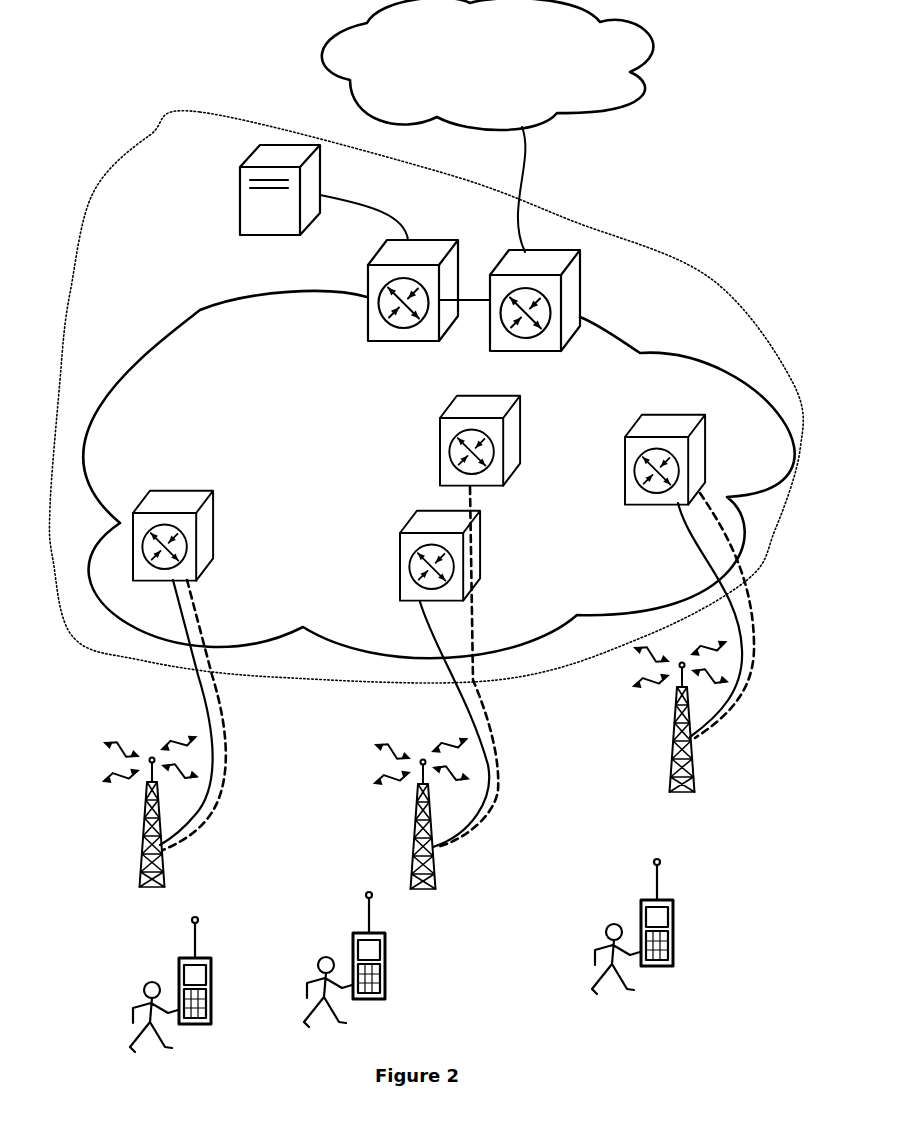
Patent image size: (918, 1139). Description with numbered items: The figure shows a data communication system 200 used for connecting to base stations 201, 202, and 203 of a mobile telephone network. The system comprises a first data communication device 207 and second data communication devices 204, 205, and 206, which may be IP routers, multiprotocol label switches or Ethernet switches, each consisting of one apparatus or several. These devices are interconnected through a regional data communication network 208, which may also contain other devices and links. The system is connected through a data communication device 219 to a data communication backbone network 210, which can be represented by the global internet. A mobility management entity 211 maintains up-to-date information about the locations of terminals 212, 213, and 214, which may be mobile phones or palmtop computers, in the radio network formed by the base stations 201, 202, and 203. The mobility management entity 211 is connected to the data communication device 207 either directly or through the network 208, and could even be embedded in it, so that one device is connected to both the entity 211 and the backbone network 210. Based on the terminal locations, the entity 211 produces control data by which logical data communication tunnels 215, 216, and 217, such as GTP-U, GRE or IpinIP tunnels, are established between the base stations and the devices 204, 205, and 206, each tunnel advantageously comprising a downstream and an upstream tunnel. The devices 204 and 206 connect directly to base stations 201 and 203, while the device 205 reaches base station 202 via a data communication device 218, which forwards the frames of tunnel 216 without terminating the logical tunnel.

The data communication system 200 is at (610, 236).
The base station 201 is at (163, 873).
The base station 202 is at (437, 863).
The base station 203 is at (672, 780).
The second data communication device 204 is at (197, 494).
The second data communication device 205 is at (440, 470).
The second data communication device 206 is at (630, 508).
The first data communication device 207 is at (368, 272).
The regional data communication network 208 is at (620, 334).
The data communication backbone network 210 is at (487, 126).
The mobility management entity 211 is at (240, 195).
The terminal 212 is at (211, 978).
The terminal 213 is at (385, 968).
The terminal 214 is at (673, 928).
The logical data communication tunnel 215 is at (225, 773).
The logical data communication tunnel 216 is at (488, 713).
The logical data communication tunnel 217 is at (713, 720).
The data communication device 218 is at (400, 591).
The data communication device 219 is at (552, 352).